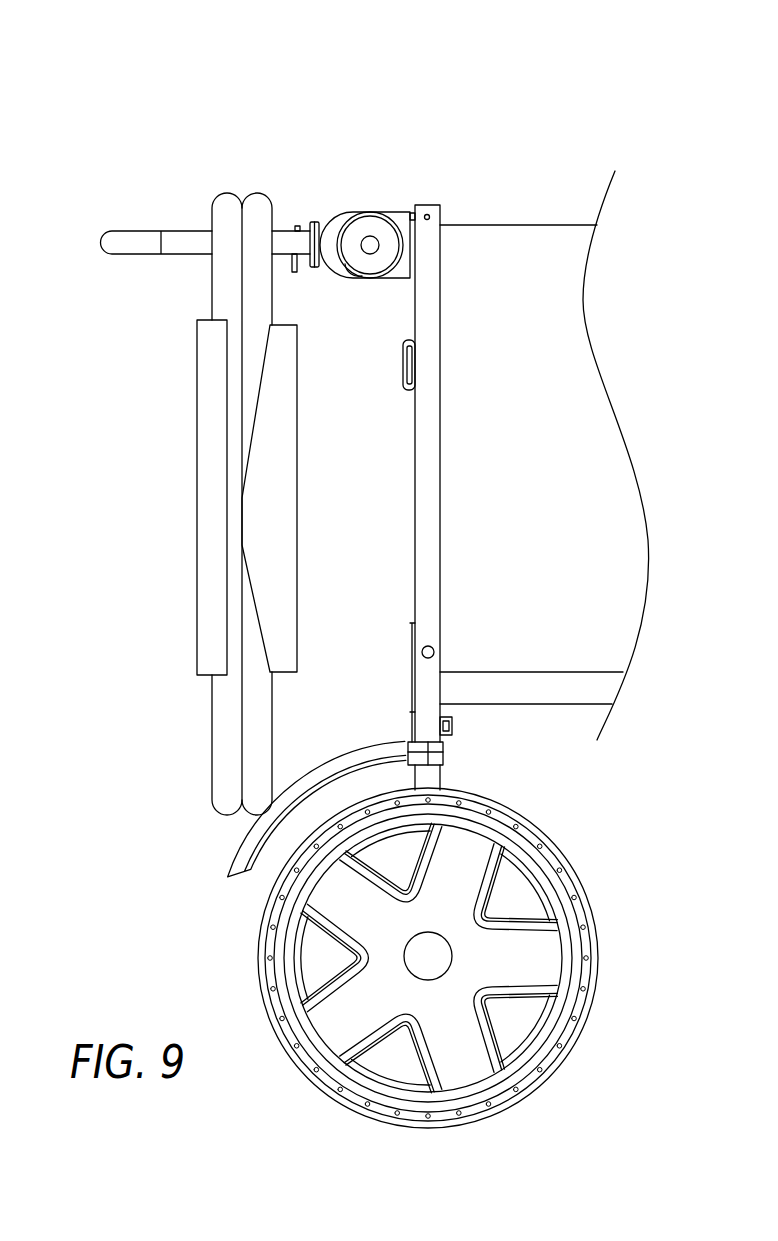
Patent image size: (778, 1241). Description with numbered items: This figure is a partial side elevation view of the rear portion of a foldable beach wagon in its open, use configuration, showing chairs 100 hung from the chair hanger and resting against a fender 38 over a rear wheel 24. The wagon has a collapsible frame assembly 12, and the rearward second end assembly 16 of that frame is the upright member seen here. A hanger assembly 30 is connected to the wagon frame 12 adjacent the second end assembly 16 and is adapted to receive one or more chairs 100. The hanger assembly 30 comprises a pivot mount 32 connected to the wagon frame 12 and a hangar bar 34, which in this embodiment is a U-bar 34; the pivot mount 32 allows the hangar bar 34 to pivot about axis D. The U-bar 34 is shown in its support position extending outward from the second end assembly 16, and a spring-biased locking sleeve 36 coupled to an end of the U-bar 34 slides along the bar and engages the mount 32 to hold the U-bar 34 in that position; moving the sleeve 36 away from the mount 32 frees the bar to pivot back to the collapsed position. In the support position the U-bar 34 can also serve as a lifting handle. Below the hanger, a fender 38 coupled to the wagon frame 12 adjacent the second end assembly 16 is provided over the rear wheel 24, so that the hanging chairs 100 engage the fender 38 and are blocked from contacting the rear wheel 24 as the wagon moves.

The collapsible frame assembly 12 is at (452, 718).
The second end assembly 16 is at (440, 496).
The rear wheel 24 is at (260, 958).
The hanger assembly 30 is at (384, 140).
The pivot mount 32 is at (387, 213).
The hangar bar 34 is at (130, 231).
The locking sleeve 36 is at (310, 267).
The fender 38 is at (242, 846).
The chair 100 is at (212, 752).
The axis D is at (367, 234).